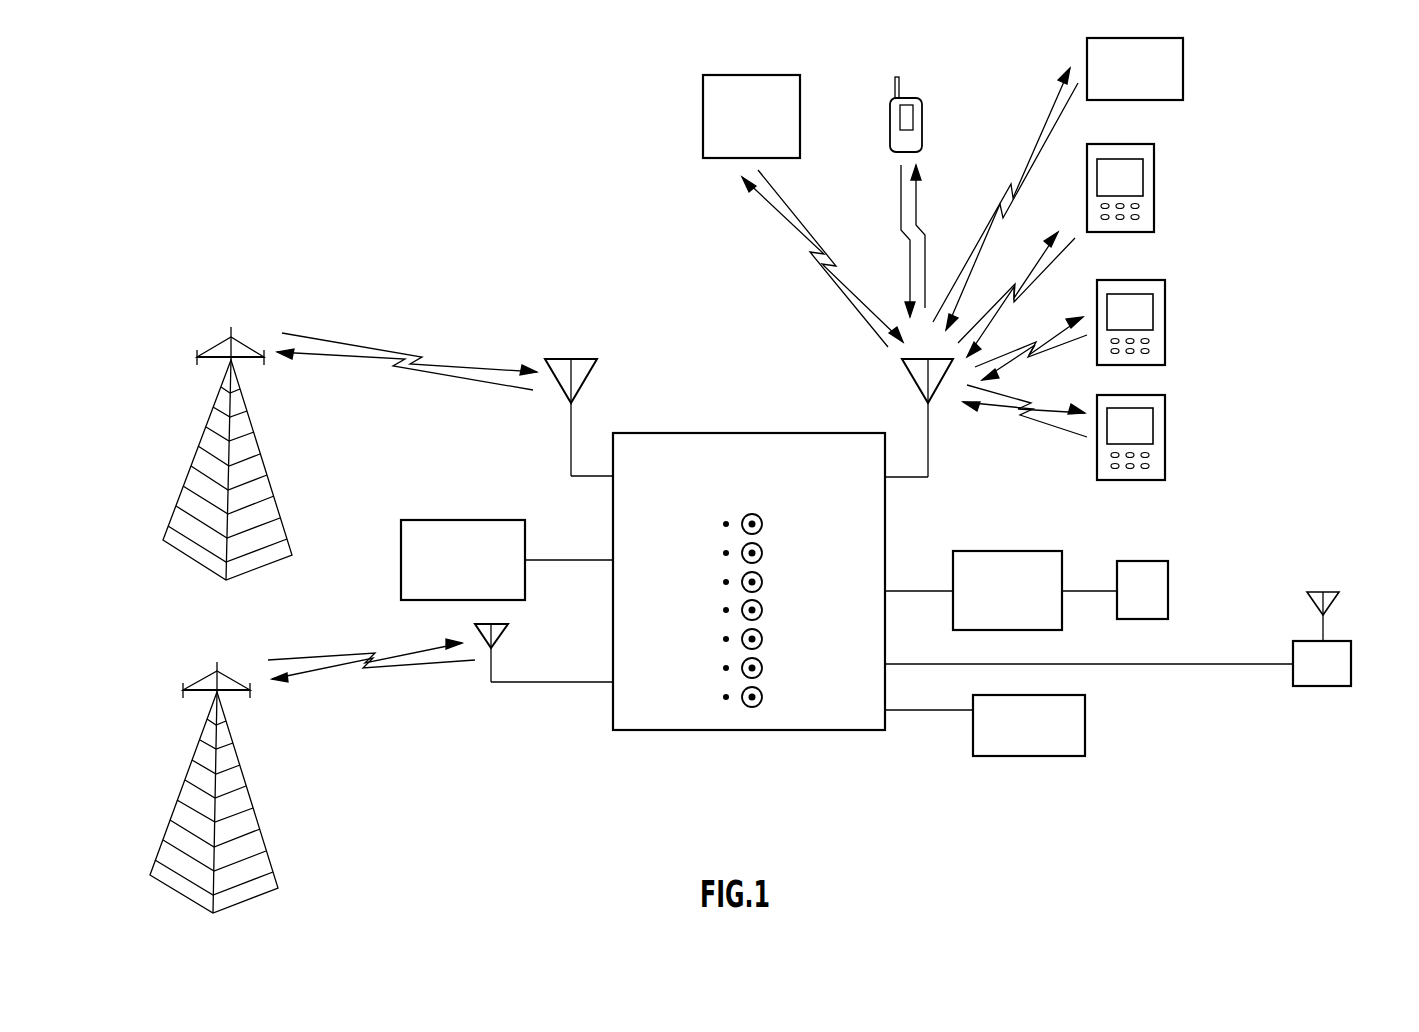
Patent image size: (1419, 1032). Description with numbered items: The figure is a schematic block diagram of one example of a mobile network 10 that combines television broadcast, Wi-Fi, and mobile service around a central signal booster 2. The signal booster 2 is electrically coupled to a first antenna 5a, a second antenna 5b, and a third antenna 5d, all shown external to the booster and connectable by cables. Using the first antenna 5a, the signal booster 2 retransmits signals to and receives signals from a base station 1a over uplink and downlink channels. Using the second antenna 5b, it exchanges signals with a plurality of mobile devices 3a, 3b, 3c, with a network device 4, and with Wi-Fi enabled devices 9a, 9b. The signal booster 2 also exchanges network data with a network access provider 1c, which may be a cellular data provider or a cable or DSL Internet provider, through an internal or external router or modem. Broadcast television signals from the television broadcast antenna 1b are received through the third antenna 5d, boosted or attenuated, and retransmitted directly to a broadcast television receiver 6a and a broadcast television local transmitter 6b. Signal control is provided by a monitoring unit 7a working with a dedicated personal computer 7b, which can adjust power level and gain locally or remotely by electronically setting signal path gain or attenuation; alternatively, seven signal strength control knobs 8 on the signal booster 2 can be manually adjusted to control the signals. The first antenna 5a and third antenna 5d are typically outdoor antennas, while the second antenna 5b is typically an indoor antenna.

The mobile network 10 is at (214, 142).
The base station 1a is at (186, 480).
The television broadcast antenna 1b is at (172, 813).
The network access provider 1c is at (453, 520).
The signal booster 2 is at (730, 731).
The mobile device 3a is at (1154, 188).
The mobile device 3b is at (1165, 322).
The mobile device 3c is at (1165, 437).
The network device 4 is at (1183, 62).
The first antenna 5a is at (588, 372).
The second antenna 5b is at (912, 372).
The third antenna 5d is at (500, 632).
The broadcast television receiver 6a is at (1085, 724).
The broadcast television local transmitter 6b is at (1351, 660).
The monitoring unit 7a is at (1062, 563).
The personal computer 7b is at (1168, 580).
The signal strength control knobs 8 is at (778, 608).
The Wi-Fi enabled device 9a is at (800, 110).
The Wi-Fi enabled device 9b is at (922, 113).